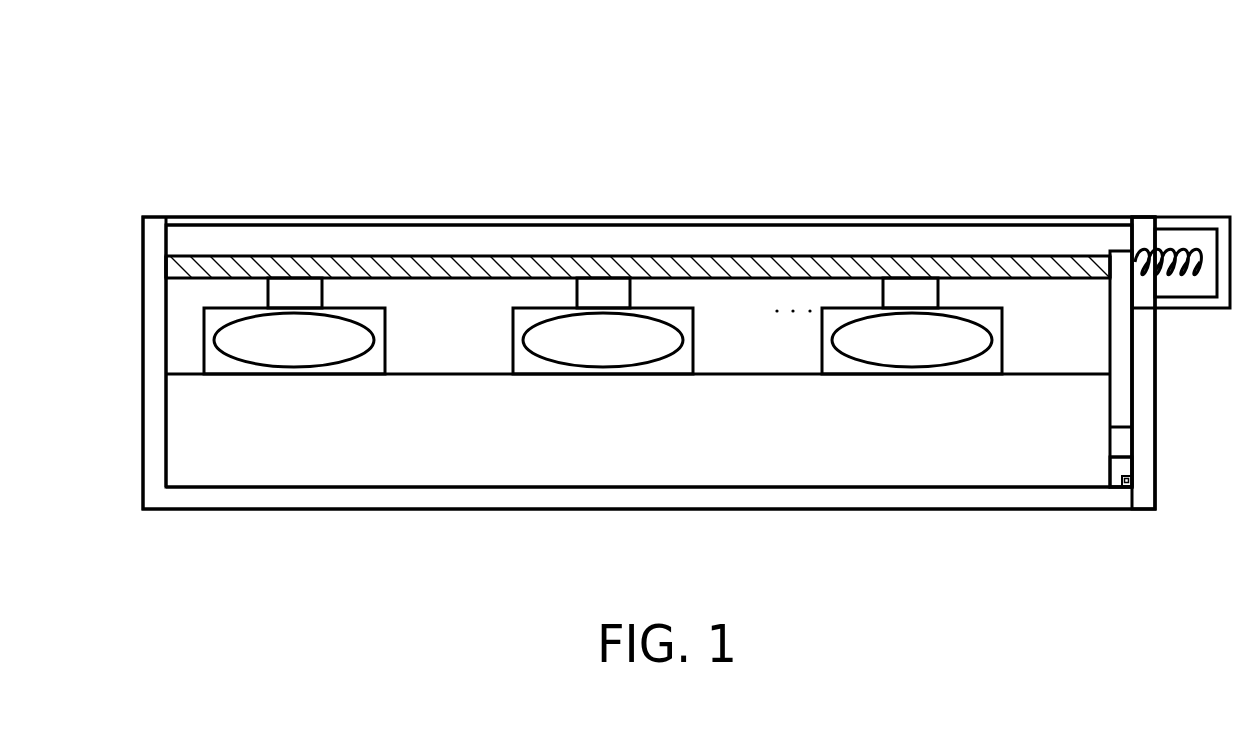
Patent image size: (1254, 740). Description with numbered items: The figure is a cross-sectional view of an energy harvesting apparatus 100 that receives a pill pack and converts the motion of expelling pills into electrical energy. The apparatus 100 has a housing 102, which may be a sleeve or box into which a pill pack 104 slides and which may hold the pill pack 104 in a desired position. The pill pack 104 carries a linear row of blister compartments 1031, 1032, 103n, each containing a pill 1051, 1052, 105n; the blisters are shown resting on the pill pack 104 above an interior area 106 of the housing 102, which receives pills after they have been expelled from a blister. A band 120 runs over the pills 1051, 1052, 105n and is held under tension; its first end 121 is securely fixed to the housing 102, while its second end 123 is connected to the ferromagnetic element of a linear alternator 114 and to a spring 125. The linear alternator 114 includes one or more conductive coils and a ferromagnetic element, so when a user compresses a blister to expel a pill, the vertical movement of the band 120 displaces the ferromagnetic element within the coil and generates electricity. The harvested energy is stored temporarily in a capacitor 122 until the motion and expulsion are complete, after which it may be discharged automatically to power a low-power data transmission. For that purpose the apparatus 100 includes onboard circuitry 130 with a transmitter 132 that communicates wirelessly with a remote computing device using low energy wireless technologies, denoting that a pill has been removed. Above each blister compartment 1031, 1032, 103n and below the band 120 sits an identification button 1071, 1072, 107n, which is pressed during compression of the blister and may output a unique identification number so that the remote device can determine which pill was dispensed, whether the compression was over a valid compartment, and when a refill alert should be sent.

The energy harvesting apparatus 100 is at (184, 102).
The housing 102 is at (257, 502).
The blister compartment 1031 is at (221, 367).
The blister compartment 1032 is at (530, 367).
The blister compartment 103n is at (839, 367).
The pill pack 104 is at (1057, 375).
The pill 1051 is at (338, 352).
The pill 1052 is at (647, 350).
The pill 105n is at (956, 350).
The interior area 106 is at (383, 475).
The identification button 1071 is at (297, 291).
The identification button 1072 is at (607, 293).
The identification button 107n is at (917, 293).
The linear alternator 114 is at (1127, 337).
The band 120 is at (425, 255).
The first end of the band 121 is at (171, 263).
The capacitor 122 is at (1127, 433).
The second end of the band 123 is at (1089, 262).
The spring 125 is at (1191, 258).
The onboard circuitry 130 is at (1127, 468).
The transmitter 132 is at (1127, 489).